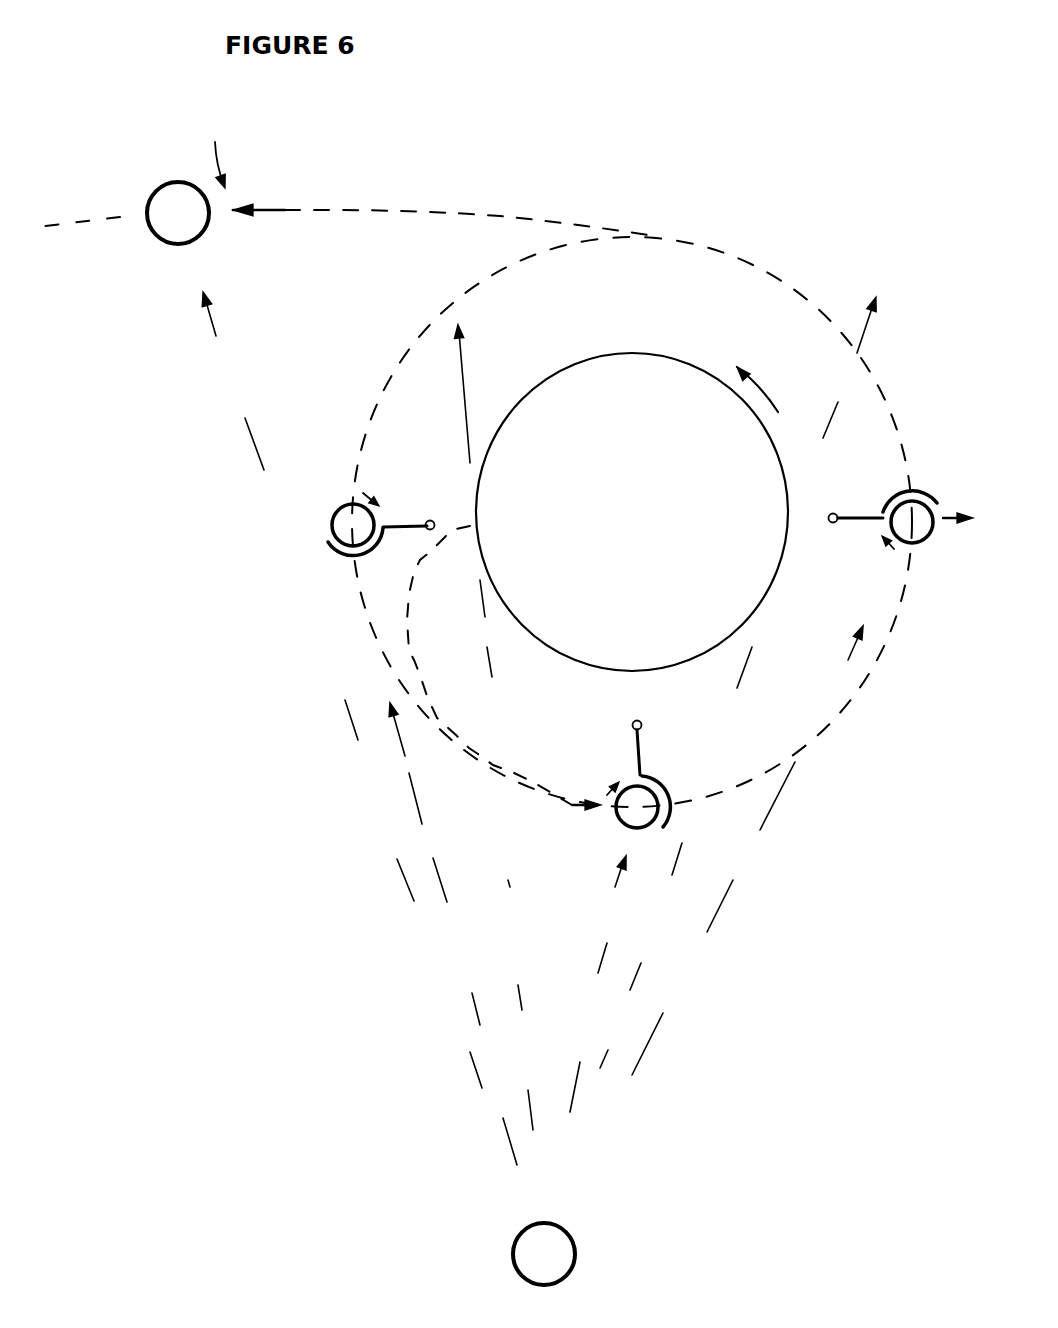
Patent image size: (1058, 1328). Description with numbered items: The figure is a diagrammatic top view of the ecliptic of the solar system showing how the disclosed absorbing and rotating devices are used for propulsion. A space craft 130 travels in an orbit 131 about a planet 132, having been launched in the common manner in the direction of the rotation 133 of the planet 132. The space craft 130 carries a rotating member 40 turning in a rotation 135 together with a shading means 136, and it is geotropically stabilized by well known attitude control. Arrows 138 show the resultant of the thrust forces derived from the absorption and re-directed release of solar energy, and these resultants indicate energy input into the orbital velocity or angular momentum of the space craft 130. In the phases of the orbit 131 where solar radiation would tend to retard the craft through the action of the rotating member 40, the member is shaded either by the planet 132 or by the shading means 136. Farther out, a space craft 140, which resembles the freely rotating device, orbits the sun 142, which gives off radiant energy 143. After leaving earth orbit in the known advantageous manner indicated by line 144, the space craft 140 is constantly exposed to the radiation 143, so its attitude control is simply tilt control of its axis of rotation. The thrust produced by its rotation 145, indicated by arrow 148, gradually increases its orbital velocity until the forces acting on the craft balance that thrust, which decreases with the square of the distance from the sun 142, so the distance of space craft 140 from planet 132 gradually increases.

The rotating member 40 is at (918, 525).
The space craft 130 is at (340, 543).
The orbit 131 is at (807, 293).
The planet 132 is at (603, 382).
The rotation 133 is at (808, 348).
The rotation 135 is at (897, 550).
The shading means 136 is at (348, 560).
The arrows 138 is at (945, 513).
The space craft 140 is at (155, 207).
The sun 142 is at (528, 1242).
The radiant energy 143 is at (210, 320).
The line 144 is at (617, 230).
The rotation 145 is at (216, 152).
The arrow 148 is at (268, 210).